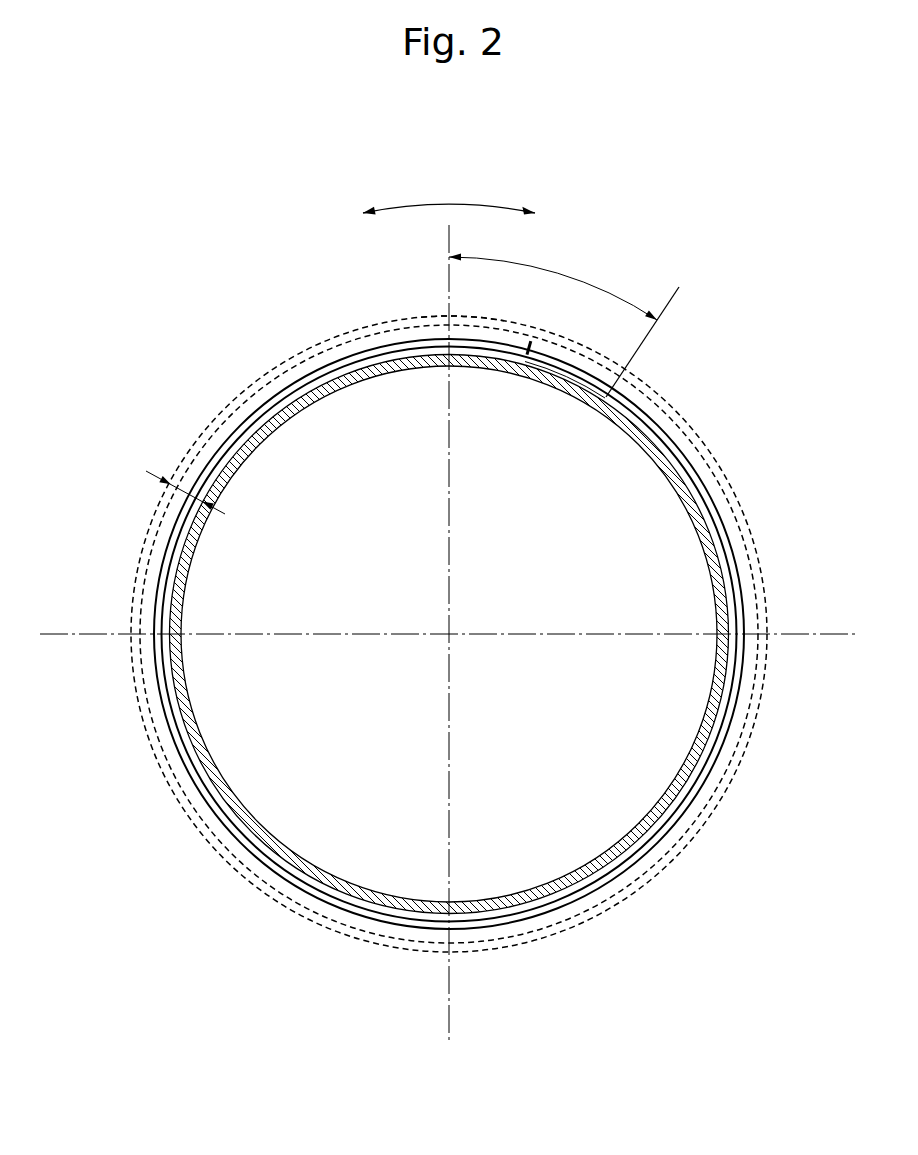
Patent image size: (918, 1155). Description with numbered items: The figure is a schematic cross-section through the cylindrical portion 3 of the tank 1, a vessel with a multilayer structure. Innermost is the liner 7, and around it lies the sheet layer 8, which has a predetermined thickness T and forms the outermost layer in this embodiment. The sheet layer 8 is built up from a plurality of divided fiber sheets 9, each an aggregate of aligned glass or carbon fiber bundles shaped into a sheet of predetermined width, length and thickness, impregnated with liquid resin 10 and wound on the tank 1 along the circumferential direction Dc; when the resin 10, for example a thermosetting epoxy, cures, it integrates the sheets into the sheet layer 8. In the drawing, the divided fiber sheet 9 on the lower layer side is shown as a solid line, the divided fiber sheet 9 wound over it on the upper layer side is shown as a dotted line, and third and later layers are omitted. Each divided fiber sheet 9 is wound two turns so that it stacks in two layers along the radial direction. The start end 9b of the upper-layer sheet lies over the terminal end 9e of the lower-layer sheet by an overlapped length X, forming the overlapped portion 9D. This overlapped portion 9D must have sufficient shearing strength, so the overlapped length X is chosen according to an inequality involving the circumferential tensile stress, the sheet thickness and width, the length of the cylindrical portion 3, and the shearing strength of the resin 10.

The tank 1 is at (718, 205).
The cylindrical portion 3 is at (702, 408).
The liner 7 is at (256, 436).
The sheet layer 8 is at (290, 355).
The divided fiber sheet 9 is at (725, 455).
The start end 9b is at (478, 313).
The overlapped portion 9D is at (530, 352).
The terminal end 9e is at (575, 345).
The resin 10 is at (750, 568).
The thickness T is at (185, 479).
The overlapped length X is at (553, 281).
The circumferential direction Dc is at (449, 195).